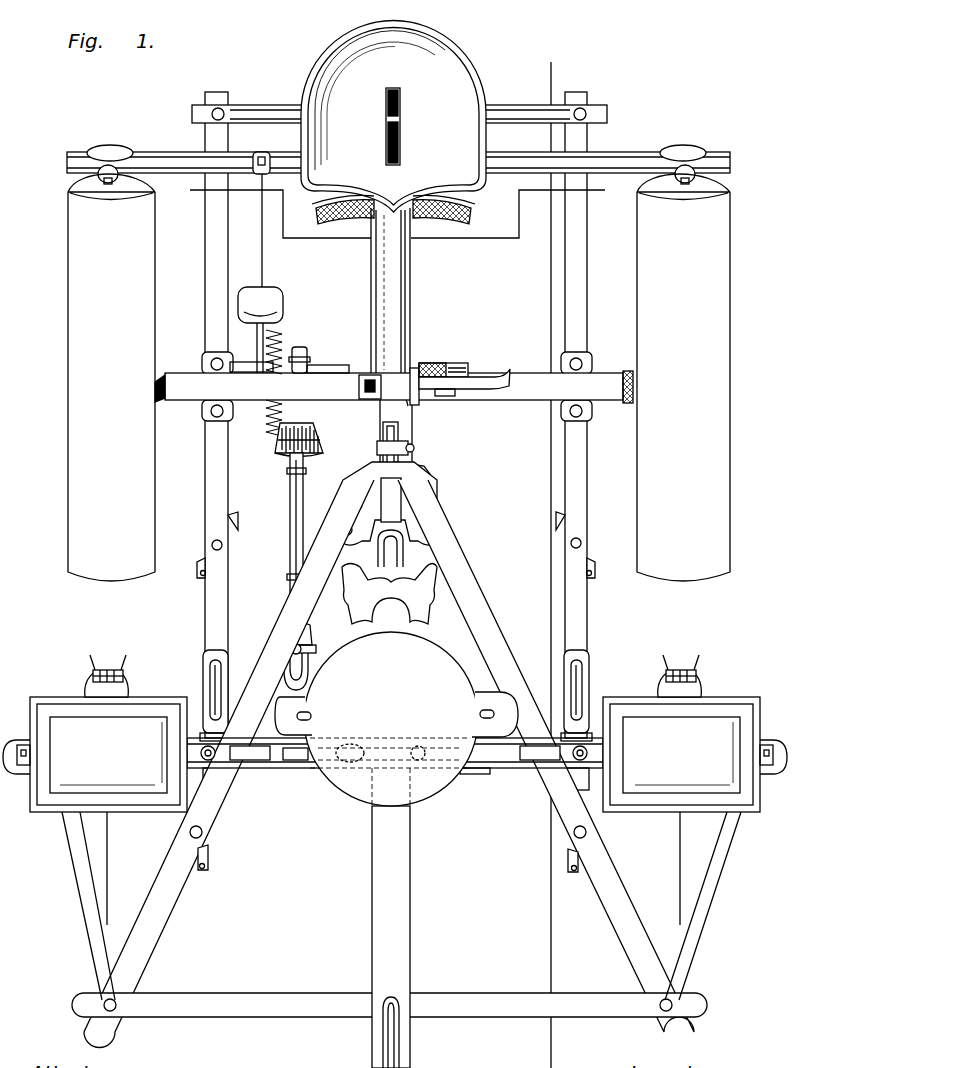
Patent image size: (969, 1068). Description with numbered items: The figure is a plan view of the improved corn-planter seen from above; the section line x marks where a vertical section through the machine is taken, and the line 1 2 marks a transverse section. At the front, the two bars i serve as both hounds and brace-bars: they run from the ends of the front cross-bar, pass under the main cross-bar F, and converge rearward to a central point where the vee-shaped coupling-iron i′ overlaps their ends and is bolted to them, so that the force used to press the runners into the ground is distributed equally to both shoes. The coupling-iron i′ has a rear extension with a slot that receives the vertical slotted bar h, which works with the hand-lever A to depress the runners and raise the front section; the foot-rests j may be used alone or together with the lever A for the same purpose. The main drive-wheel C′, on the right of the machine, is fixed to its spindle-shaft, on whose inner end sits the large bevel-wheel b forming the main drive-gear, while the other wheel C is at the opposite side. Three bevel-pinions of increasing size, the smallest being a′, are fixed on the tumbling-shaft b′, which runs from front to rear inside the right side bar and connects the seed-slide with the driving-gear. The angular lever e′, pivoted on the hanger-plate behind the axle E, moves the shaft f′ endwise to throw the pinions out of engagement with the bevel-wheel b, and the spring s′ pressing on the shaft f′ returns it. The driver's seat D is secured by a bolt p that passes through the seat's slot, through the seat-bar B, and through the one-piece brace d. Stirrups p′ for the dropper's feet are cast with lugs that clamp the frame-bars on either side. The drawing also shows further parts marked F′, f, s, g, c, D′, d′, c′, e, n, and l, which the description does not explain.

The section line x is at (561, 553).
The brace d is at (505, 118).
The right upright post F′ is at (580, 505).
The main cross-bar F is at (478, 775).
The main drive-wheel C′ is at (111, 377).
The right cylinder C is at (683, 377).
The section line 1 is at (271, 208).
The section line 2 is at (516, 208).
The driver's seat D is at (393, 117).
The bolt p is at (400, 118).
The cushion pads f is at (472, 218).
The seat-bar B is at (411, 283).
The axle E is at (394, 387).
The bevel-wheel b is at (282, 335).
The tumbling-shaft b′ is at (310, 352).
The bevel-pinion a′ is at (312, 436).
The shaft s is at (290, 523).
The hand-lever A is at (385, 398).
The spring s′ is at (419, 372).
The angular lever e′ is at (452, 364).
The shaft f′ is at (478, 372).
The foot-rests j is at (490, 390).
The vertical slotted bar h is at (414, 450).
The wedge g is at (430, 470).
The coupling-iron i′ is at (437, 498).
The brace-bars and hounds i is at (389, 764).
The lower rail c is at (262, 768).
The disc D′ is at (391, 719).
The battery box d′ is at (395, 754).
The cup c′ is at (85, 690).
The coil e is at (110, 670).
The terminal n is at (740, 652).
The brace l is at (107, 853).
The stirrup p′ is at (200, 574).